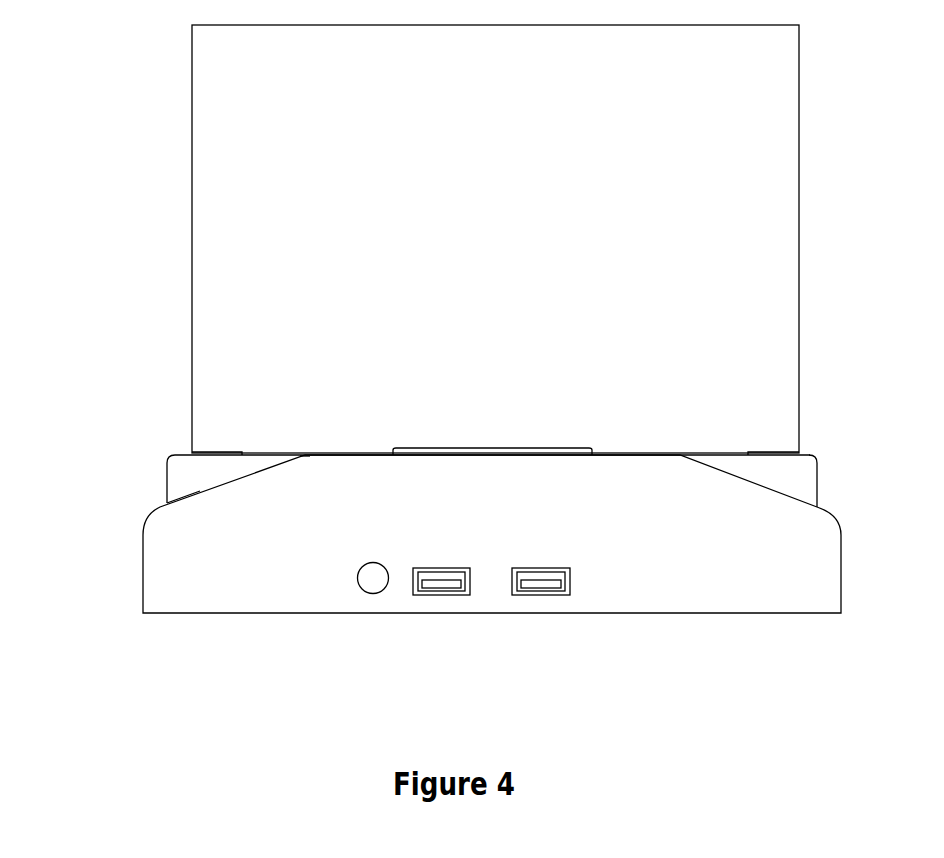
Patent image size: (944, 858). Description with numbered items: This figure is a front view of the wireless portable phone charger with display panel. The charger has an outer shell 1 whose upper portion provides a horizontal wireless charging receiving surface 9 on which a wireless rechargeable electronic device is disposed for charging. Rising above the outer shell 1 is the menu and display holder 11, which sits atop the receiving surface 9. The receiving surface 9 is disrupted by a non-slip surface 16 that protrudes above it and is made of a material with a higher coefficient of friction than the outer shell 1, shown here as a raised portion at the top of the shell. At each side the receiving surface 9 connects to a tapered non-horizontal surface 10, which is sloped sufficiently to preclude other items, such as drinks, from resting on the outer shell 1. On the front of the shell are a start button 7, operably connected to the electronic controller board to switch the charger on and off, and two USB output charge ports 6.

The outer shell 1 is at (140, 593).
The USB output charge port 6 is at (537, 595).
The start button 7 is at (370, 595).
The horizontal wireless charging receiving surface 9 is at (327, 452).
The non-horizontal surface 10 is at (202, 490).
The menu and display holder 11 is at (190, 195).
The non-slip surface 16 is at (542, 450).